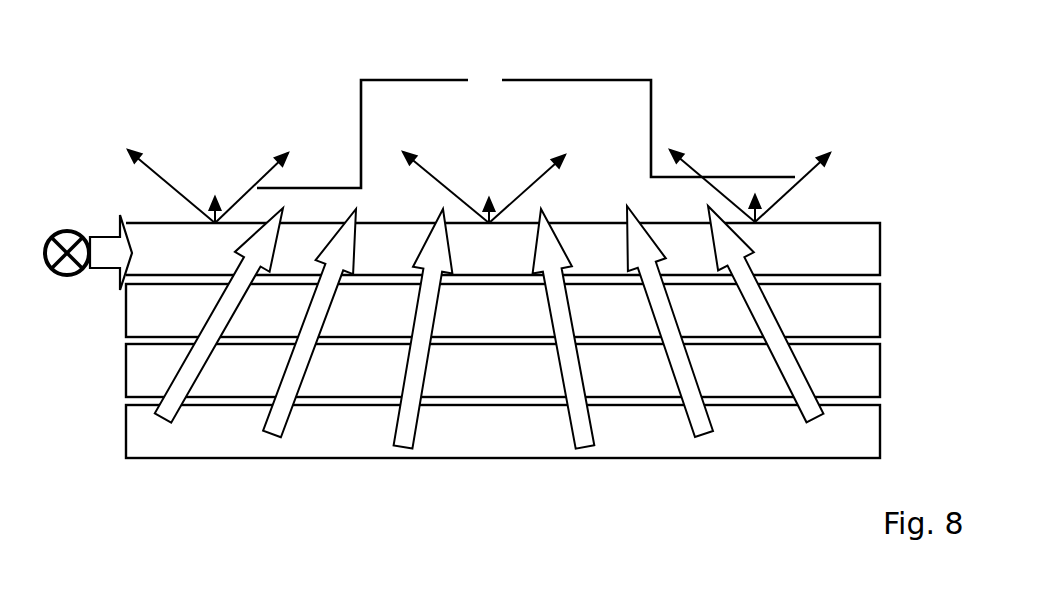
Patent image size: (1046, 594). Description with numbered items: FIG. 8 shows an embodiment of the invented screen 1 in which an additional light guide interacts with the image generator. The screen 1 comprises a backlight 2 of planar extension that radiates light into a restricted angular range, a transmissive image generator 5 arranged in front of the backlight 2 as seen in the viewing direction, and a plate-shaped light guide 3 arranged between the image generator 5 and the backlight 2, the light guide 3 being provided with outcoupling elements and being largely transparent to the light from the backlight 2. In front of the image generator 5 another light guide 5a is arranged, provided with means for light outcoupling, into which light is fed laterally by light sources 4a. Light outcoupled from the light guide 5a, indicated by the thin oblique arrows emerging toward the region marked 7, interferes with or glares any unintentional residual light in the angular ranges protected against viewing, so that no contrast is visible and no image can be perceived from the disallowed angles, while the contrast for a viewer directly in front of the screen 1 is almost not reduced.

The screen 1 is at (536, 340).
The backlight 2 is at (503, 431).
The light guide 3 is at (503, 370).
The image generator 5 is at (503, 310).
The light guide 5a is at (503, 249).
The light sources 4a is at (66, 225).
The outcoupling structure 7 is at (527, 180).